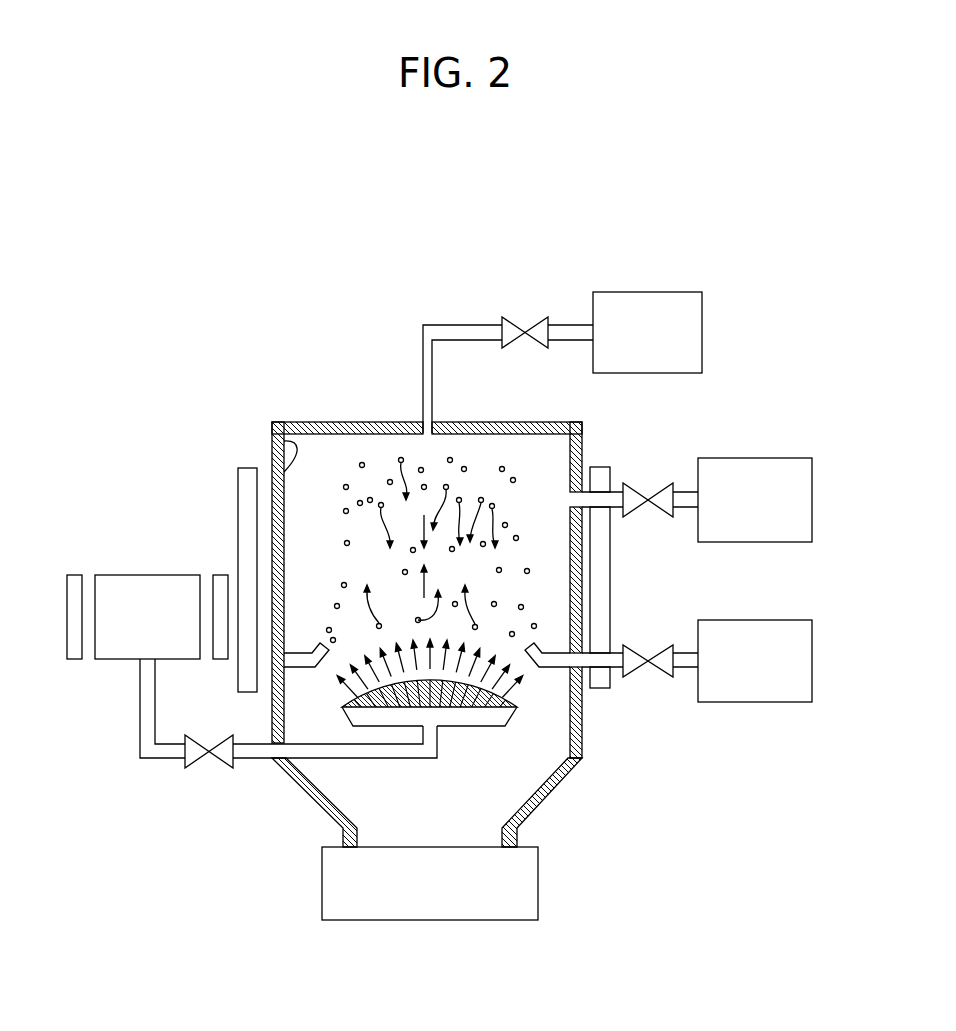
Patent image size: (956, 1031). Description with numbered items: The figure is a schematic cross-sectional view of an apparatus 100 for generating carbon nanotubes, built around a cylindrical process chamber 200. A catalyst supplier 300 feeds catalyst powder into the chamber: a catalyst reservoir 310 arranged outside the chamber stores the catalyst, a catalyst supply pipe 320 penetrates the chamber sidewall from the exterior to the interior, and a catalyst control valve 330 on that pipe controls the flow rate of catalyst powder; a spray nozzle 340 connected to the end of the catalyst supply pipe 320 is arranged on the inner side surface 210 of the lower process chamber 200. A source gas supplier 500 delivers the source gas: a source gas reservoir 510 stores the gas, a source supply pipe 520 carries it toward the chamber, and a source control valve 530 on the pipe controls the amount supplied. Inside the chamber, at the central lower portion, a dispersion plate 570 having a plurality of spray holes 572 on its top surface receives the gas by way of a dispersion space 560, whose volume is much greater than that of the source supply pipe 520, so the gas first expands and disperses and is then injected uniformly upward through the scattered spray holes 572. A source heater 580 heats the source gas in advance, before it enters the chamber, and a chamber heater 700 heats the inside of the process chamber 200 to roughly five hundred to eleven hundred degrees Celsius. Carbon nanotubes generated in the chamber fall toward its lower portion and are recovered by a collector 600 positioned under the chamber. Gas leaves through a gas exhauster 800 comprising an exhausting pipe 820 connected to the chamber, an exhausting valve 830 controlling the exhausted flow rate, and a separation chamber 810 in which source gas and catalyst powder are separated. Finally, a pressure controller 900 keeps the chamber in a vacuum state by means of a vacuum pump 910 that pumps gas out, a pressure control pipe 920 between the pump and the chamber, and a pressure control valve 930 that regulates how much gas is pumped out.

The apparatus for generating the CNT 100 is at (433, 153).
The process chamber 200 is at (318, 422).
The inner side surface 210 is at (284, 447).
The catalyst supplier 300 is at (790, 721).
The catalyst reservoir 310 is at (752, 620).
The catalyst supply pipe 320 is at (685, 653).
The catalyst control valve 330 is at (628, 645).
The spray nozzle 340 is at (534, 660).
The source gas supplier 500 is at (109, 556).
The source gas reservoir 510 is at (146, 575).
The source supply pipe 520 is at (162, 760).
The source control valve 530 is at (215, 768).
The dispersion space 560 is at (476, 718).
The dispersion plate 570 is at (496, 710).
The spray holes 572 is at (490, 708).
The source heater 580 is at (75, 662).
The collector 600 is at (538, 882).
The chamber heater 700 is at (243, 500).
The gas exhauster 800 is at (715, 277).
The separation chamber 810 is at (643, 292).
The exhausting pipe 820 is at (566, 325).
The exhausting valve 830 is at (520, 317).
The pressure controller 900 is at (790, 441).
The vacuum pump 910 is at (752, 458).
The pressure control pipe 920 is at (685, 492).
The pressure control valve 930 is at (628, 483).